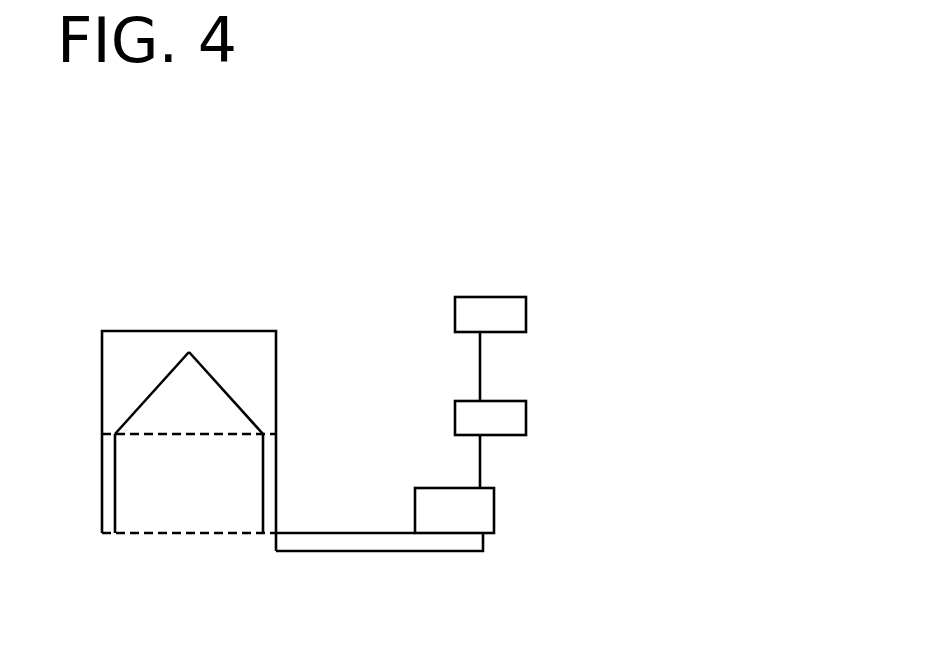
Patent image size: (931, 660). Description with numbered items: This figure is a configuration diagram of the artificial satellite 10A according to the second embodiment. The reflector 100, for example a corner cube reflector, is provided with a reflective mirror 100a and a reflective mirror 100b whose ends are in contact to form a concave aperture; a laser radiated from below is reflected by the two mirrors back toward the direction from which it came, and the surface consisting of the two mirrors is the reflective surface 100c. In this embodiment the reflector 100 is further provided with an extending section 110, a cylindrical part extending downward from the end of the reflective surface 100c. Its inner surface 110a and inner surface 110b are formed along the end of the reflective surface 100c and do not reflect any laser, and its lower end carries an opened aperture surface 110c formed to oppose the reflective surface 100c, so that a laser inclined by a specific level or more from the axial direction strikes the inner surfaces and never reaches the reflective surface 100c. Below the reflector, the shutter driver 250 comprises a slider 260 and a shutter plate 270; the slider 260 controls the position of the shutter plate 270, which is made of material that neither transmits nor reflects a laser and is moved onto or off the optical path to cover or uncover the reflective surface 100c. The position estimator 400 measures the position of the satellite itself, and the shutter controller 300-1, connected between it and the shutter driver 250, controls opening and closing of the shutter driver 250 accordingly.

The artificial satellite 10A is at (409, 214).
The reflector 100 is at (176, 331).
The reflective mirror 100a is at (145, 402).
The reflective mirror 100b is at (233, 402).
The reflective surface 100c is at (237, 487).
The extending section 110 is at (285, 433).
The inner surface 110a is at (120, 497).
The inner surface 110b is at (257, 497).
The aperture surface 110c is at (191, 537).
The shutter driver 250 is at (573, 493).
The slider 260 is at (495, 513).
The shutter plate 270 is at (485, 541).
The shutter controller 300-1 is at (527, 417).
The position estimator 400 is at (527, 314).